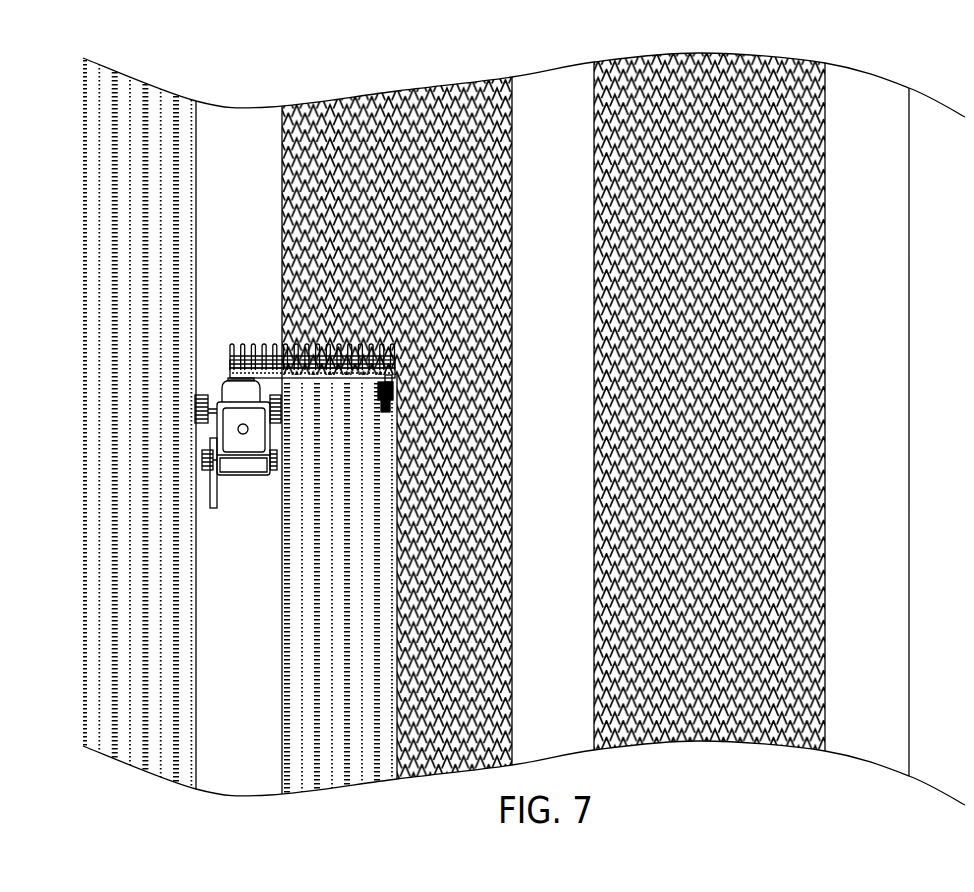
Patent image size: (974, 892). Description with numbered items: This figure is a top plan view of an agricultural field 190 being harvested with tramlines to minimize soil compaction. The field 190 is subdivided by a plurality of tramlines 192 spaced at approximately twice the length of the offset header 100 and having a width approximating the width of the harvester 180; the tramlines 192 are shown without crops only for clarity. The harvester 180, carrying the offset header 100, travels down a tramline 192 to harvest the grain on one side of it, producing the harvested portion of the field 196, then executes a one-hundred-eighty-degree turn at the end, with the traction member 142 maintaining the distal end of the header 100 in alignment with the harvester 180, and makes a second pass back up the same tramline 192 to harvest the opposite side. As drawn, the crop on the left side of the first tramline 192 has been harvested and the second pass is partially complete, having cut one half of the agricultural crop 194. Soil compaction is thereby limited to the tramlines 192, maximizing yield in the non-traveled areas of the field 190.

The offset header 100 is at (263, 343).
The traction member 142 is at (383, 414).
The harvester 180 is at (240, 478).
The agricultural field 190 is at (710, 53).
The tramlines 192 is at (247, 154).
The agricultural crop 194 is at (382, 145).
The harvested portion of the field 196 is at (340, 752).